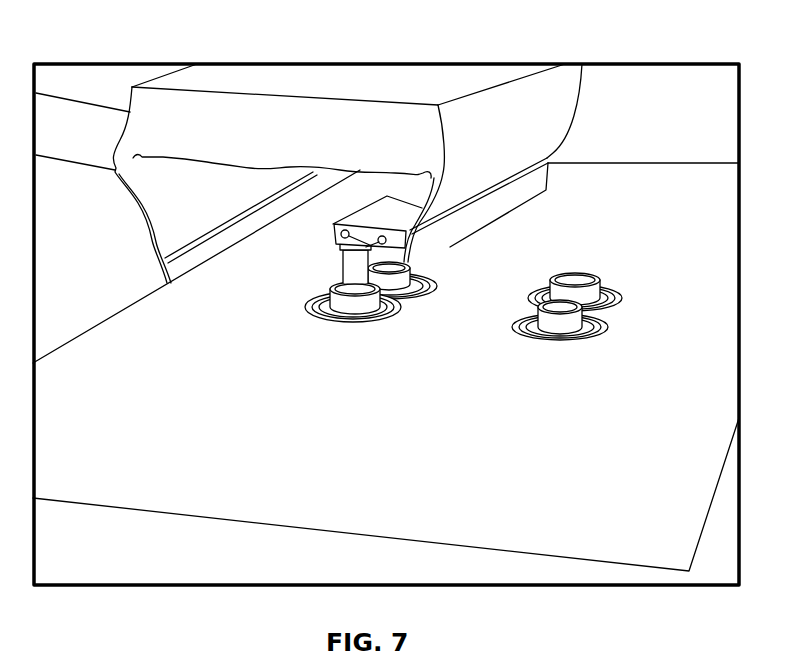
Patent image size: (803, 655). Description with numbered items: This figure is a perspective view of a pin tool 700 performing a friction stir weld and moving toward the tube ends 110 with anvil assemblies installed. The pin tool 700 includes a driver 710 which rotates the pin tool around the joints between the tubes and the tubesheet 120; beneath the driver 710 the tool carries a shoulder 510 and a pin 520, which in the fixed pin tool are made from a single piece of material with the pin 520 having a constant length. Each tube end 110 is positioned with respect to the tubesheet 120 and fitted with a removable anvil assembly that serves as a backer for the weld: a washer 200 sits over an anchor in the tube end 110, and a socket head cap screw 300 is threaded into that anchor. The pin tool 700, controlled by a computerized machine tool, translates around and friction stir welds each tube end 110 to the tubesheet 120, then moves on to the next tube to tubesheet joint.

The pin tool 700 is at (405, 120).
The driver 710 is at (346, 251).
The shoulder 510 is at (350, 262).
The pin 520 is at (330, 311).
The tube end 110 is at (536, 292).
The tubesheet 120 is at (601, 272).
The socket head cap screw 300 is at (590, 292).
The washer 200 is at (614, 301).